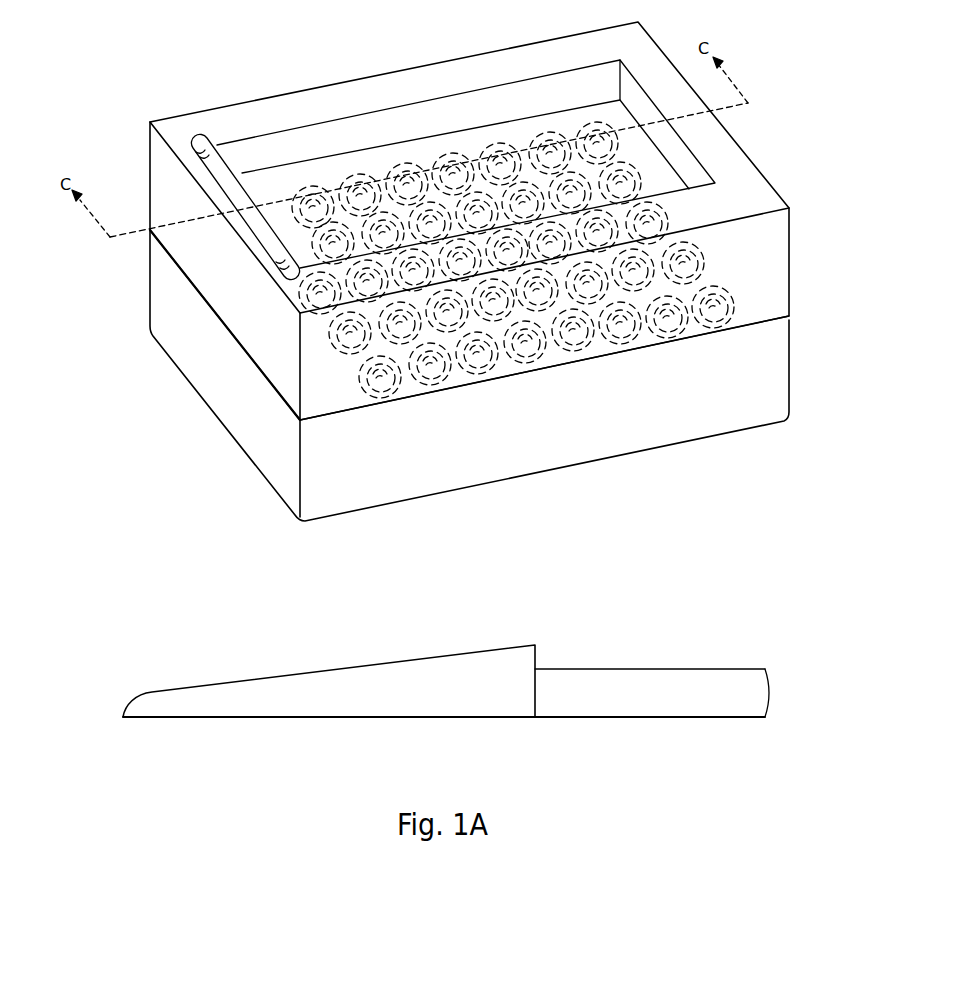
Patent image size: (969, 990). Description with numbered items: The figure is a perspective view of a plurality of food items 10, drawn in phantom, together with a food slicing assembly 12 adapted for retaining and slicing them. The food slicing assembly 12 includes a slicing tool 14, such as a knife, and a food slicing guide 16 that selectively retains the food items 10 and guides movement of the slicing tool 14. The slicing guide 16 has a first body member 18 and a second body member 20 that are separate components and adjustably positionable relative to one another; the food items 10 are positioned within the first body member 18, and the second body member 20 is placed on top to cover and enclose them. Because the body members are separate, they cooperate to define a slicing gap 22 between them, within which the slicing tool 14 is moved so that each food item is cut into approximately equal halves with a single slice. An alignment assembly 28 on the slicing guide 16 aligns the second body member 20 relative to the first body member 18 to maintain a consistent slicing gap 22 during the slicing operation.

The food items 10 is at (690, 263).
The food slicing assembly 12 is at (198, 552).
The slicing tool 14 is at (293, 693).
The food slicing guide 16 is at (270, 507).
The first body member 18 is at (238, 408).
The second body member 20 is at (228, 288).
The slicing gap 22 is at (751, 325).
The alignment assembly 28 is at (213, 174).